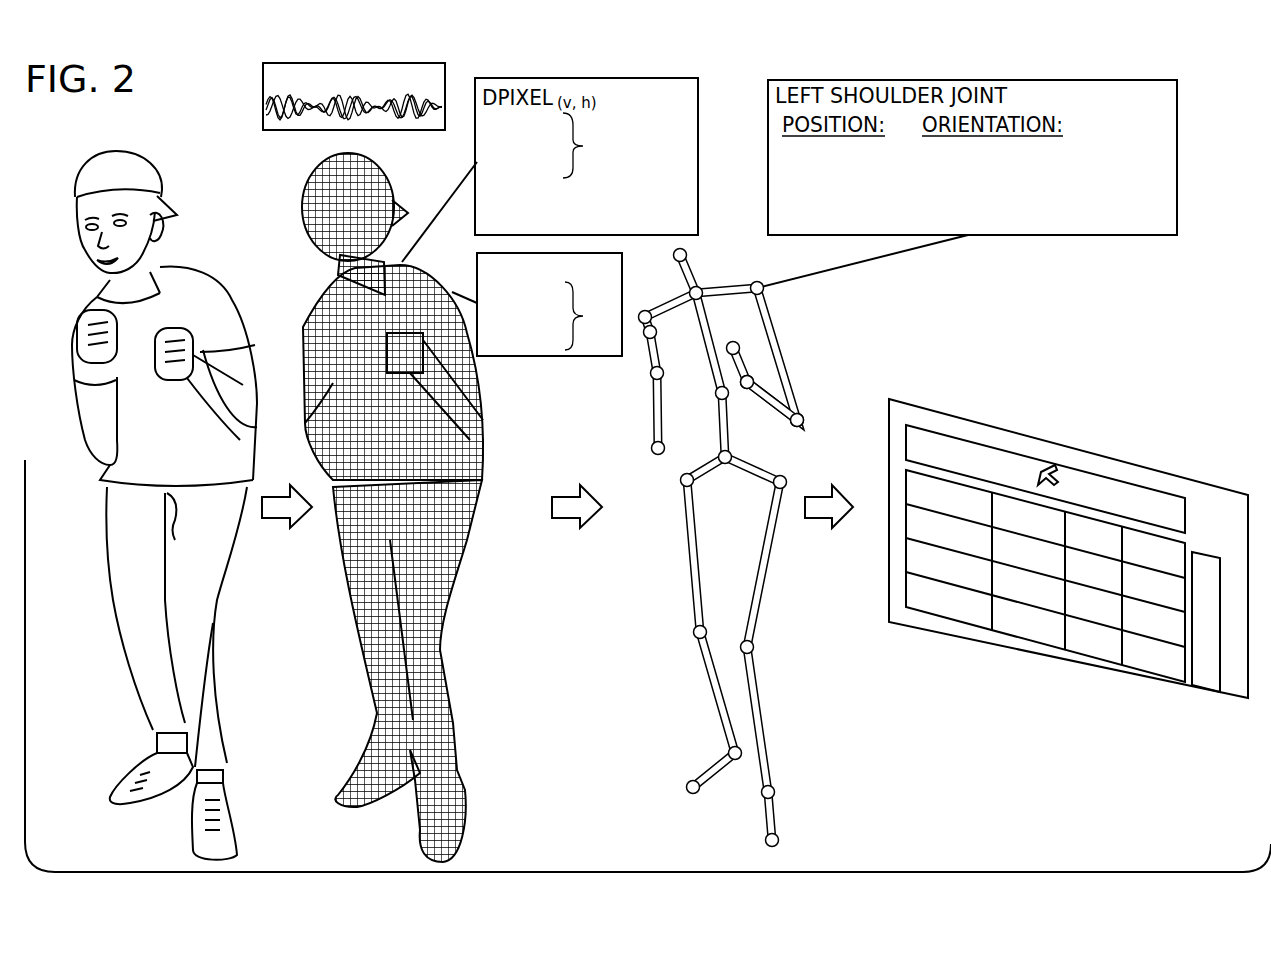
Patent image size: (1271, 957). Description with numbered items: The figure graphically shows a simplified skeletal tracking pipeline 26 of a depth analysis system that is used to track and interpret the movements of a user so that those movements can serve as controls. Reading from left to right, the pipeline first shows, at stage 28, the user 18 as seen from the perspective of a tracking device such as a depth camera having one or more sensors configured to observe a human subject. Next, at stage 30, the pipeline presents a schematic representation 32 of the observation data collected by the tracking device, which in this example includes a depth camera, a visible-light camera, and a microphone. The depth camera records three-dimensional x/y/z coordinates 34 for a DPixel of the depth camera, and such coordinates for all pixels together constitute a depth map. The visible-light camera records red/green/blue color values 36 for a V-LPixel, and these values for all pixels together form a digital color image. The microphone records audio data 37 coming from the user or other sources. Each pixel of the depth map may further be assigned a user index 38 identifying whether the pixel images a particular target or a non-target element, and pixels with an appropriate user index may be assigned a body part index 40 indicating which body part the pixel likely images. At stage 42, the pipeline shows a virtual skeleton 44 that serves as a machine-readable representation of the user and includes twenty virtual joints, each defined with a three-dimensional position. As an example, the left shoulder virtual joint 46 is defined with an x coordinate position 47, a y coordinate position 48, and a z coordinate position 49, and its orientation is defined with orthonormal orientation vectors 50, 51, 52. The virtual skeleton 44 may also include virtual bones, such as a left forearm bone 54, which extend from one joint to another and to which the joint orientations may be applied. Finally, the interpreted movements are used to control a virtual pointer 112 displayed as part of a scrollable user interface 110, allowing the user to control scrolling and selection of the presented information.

The human subject 18 is at (80, 168).
The skeletal tracking pipeline 26 is at (1210, 828).
The view of user from tracking device perspective 28 is at (186, 141).
The observation data stage 30 is at (352, 506).
The schematic representation of observation data 32 is at (307, 174).
The three-dimensional x/y/z coordinates 34 is at (552, 144).
The red/green/blue color values 36 is at (537, 304).
The audio data 37 is at (262, 100).
The user index 38 is at (490, 195).
The body part index 40 is at (490, 218).
The virtual skeleton representation stage 42 is at (732, 548).
The virtual skeleton 44 is at (767, 567).
The left shoulder virtual joint 46 is at (770, 291).
The x coordinate position 47 is at (790, 152).
The y coordinate position 48 is at (790, 178).
The z coordinate position 49 is at (790, 204).
The orientation vector 50 is at (1160, 155).
The orientation vector 51 is at (1160, 183).
The orientation vector 52 is at (1165, 213).
The left forearm bone 54 is at (773, 410).
The scrollable user interface 110 is at (1071, 548).
The virtual pointer 112 is at (1053, 466).